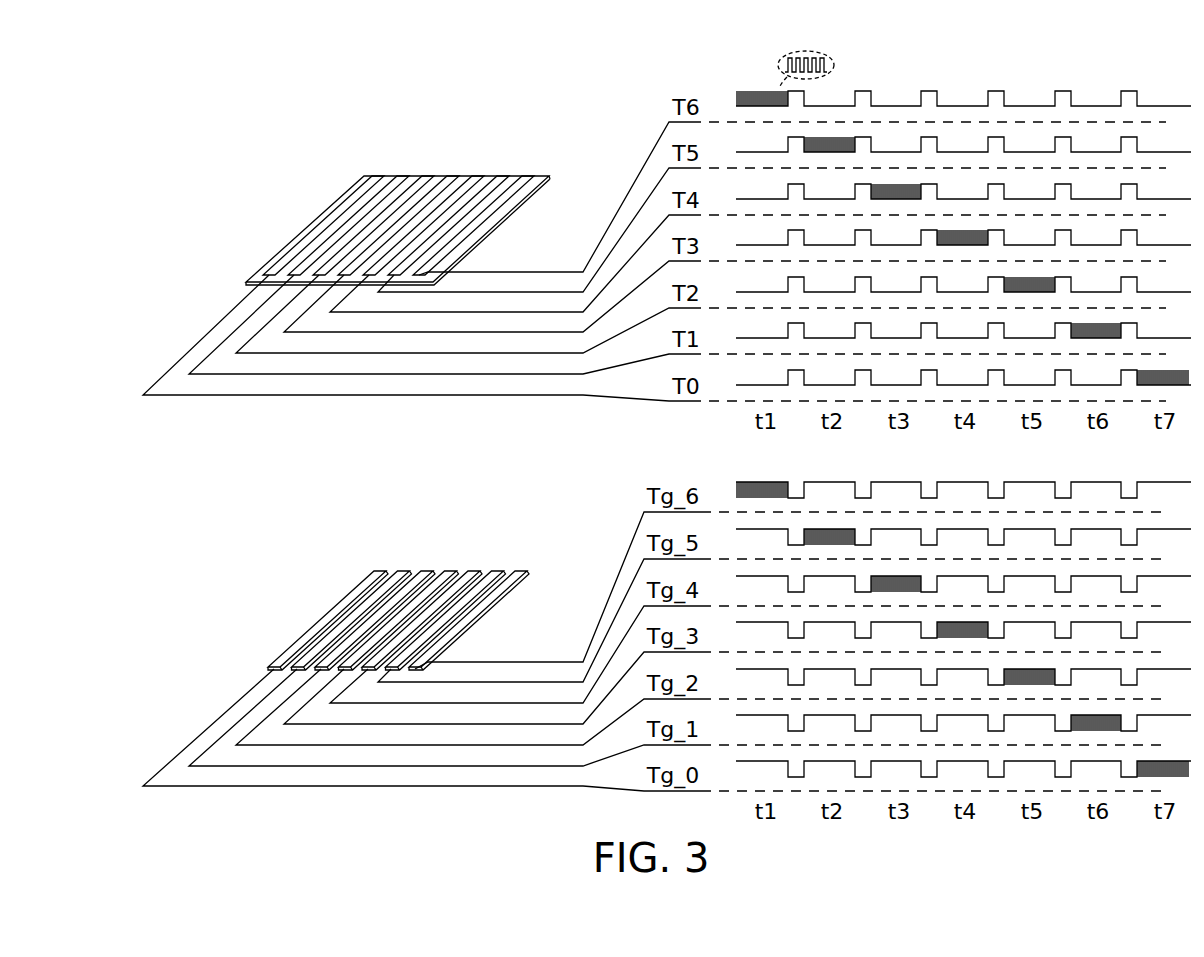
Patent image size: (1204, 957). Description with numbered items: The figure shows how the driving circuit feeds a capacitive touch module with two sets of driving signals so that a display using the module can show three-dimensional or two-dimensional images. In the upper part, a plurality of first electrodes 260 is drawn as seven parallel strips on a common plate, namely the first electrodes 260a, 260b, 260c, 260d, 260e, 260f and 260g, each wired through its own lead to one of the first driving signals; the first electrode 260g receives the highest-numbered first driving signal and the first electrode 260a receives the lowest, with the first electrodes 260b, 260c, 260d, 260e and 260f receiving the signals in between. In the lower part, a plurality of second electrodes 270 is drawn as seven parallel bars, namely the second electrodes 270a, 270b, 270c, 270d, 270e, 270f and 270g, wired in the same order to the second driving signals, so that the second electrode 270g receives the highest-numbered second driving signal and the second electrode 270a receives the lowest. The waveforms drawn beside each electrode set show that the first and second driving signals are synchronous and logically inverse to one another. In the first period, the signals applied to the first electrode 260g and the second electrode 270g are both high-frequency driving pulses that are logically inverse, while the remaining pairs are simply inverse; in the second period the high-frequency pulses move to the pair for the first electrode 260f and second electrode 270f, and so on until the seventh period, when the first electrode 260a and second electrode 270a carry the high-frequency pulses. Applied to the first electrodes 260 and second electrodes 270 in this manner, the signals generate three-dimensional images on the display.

The first electrodes 260 is at (262, 192).
The first electrode 260a is at (377, 178).
The first electrode 260b is at (403, 178).
The first electrode 260c is at (428, 178).
The first electrode 260d is at (452, 178).
The first electrode 260e is at (477, 178).
The first electrode 260f is at (501, 178).
The first electrode 260g is at (528, 178).
The second electrodes 270 is at (262, 612).
The second electrode 270a is at (376, 571).
The second electrode 270b is at (400, 571).
The second electrode 270c is at (425, 571).
The second electrode 270d is at (448, 571).
The second electrode 270e is at (472, 571).
The second electrode 270f is at (495, 571).
The second electrode 270g is at (518, 571).